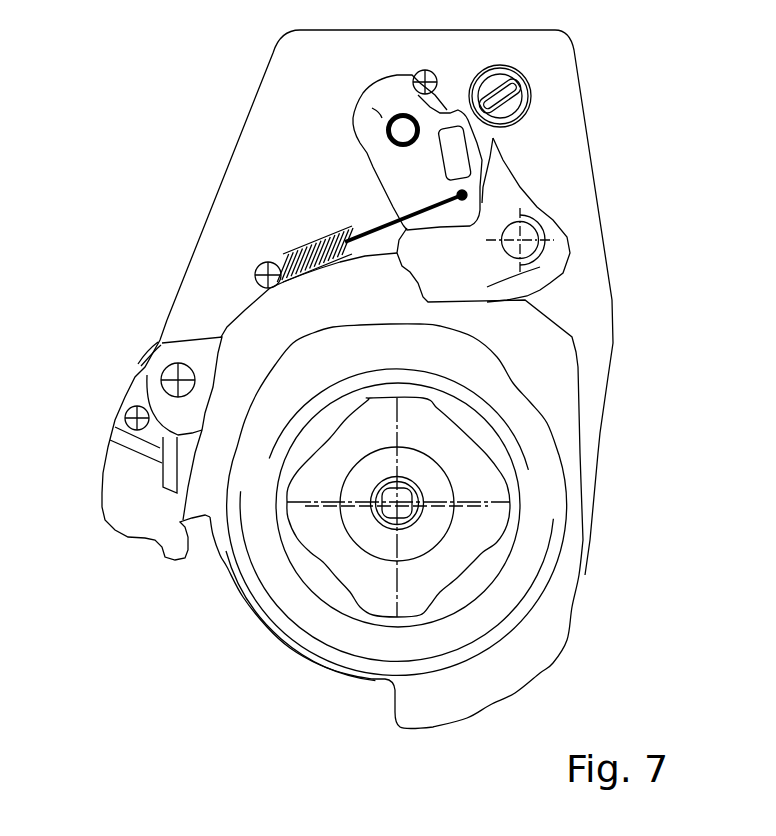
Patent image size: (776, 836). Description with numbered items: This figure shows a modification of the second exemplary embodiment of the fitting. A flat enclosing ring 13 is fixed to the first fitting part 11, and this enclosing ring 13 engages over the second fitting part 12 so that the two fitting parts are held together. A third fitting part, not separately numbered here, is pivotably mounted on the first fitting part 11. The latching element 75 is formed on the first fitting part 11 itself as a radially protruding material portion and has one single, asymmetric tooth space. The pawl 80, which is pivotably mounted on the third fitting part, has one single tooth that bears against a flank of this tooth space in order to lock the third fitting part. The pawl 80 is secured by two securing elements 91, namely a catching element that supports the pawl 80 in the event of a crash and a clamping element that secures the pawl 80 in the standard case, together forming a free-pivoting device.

The first fitting part 11 is at (578, 370).
The second fitting part 12 is at (467, 568).
The enclosing ring 13 is at (540, 455).
The latching element 75 is at (275, 136).
The pawl 80 is at (437, 260).
The securing elements 91 is at (357, 137).